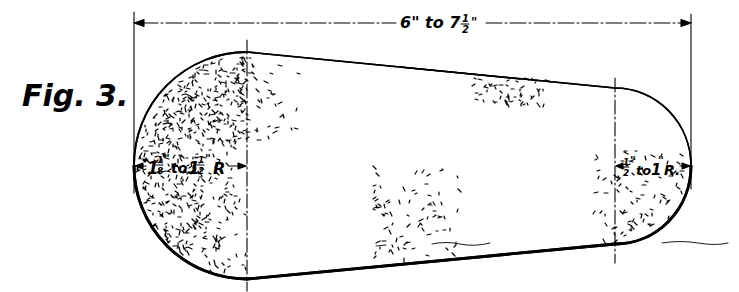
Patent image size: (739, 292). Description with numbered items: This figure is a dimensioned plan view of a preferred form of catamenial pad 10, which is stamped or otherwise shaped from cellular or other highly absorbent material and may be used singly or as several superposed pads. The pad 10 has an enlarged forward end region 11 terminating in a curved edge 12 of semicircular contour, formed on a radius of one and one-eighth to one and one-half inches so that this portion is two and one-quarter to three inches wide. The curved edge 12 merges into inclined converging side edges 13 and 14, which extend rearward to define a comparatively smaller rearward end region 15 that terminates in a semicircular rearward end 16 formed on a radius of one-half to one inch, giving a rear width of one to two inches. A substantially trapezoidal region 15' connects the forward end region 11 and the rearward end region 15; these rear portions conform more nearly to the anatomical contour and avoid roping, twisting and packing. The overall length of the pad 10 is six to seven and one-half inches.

The pad 10 is at (559, 97).
The forward end region 11 is at (147, 218).
The curved edge 12 is at (171, 82).
The side edge 13 is at (336, 60).
The side edge 14 is at (495, 258).
The rearward end region 15 is at (653, 120).
The trapezoidal region 15' is at (460, 65).
The semicircular rearward end 16 is at (677, 213).